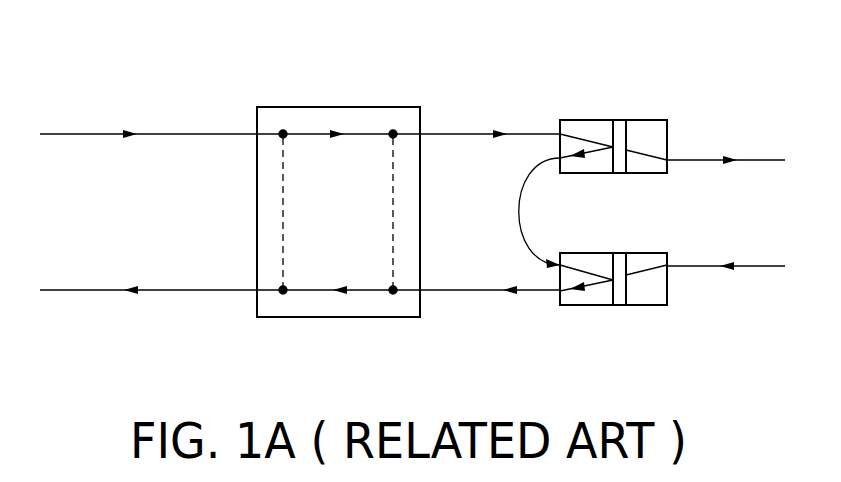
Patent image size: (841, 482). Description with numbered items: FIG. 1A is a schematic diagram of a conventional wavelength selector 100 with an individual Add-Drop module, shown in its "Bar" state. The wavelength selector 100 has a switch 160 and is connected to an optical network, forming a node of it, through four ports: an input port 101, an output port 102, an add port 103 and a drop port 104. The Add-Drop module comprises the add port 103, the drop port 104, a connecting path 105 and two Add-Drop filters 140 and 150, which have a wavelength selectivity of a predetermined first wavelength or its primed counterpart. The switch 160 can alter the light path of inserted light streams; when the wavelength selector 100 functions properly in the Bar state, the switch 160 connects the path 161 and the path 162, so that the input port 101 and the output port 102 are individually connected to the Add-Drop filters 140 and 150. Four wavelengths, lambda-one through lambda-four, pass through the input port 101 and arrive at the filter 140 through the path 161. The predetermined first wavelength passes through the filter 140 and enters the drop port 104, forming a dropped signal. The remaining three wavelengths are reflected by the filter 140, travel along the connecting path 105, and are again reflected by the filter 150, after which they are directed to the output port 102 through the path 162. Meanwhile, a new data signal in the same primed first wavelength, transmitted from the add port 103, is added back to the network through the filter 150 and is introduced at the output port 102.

The wavelength selector 100 is at (79, 40).
The input port 101 is at (80, 136).
The output port 102 is at (80, 292).
The add port 103 is at (760, 268).
The drop port 104 is at (760, 162).
The connecting path 105 is at (517, 210).
The Add-Drop filter 140 is at (690, 97).
The Add-Drop filter 150 is at (690, 357).
The switch 160 is at (385, 80).
The path 161 is at (372, 137).
The path 162 is at (368, 289).